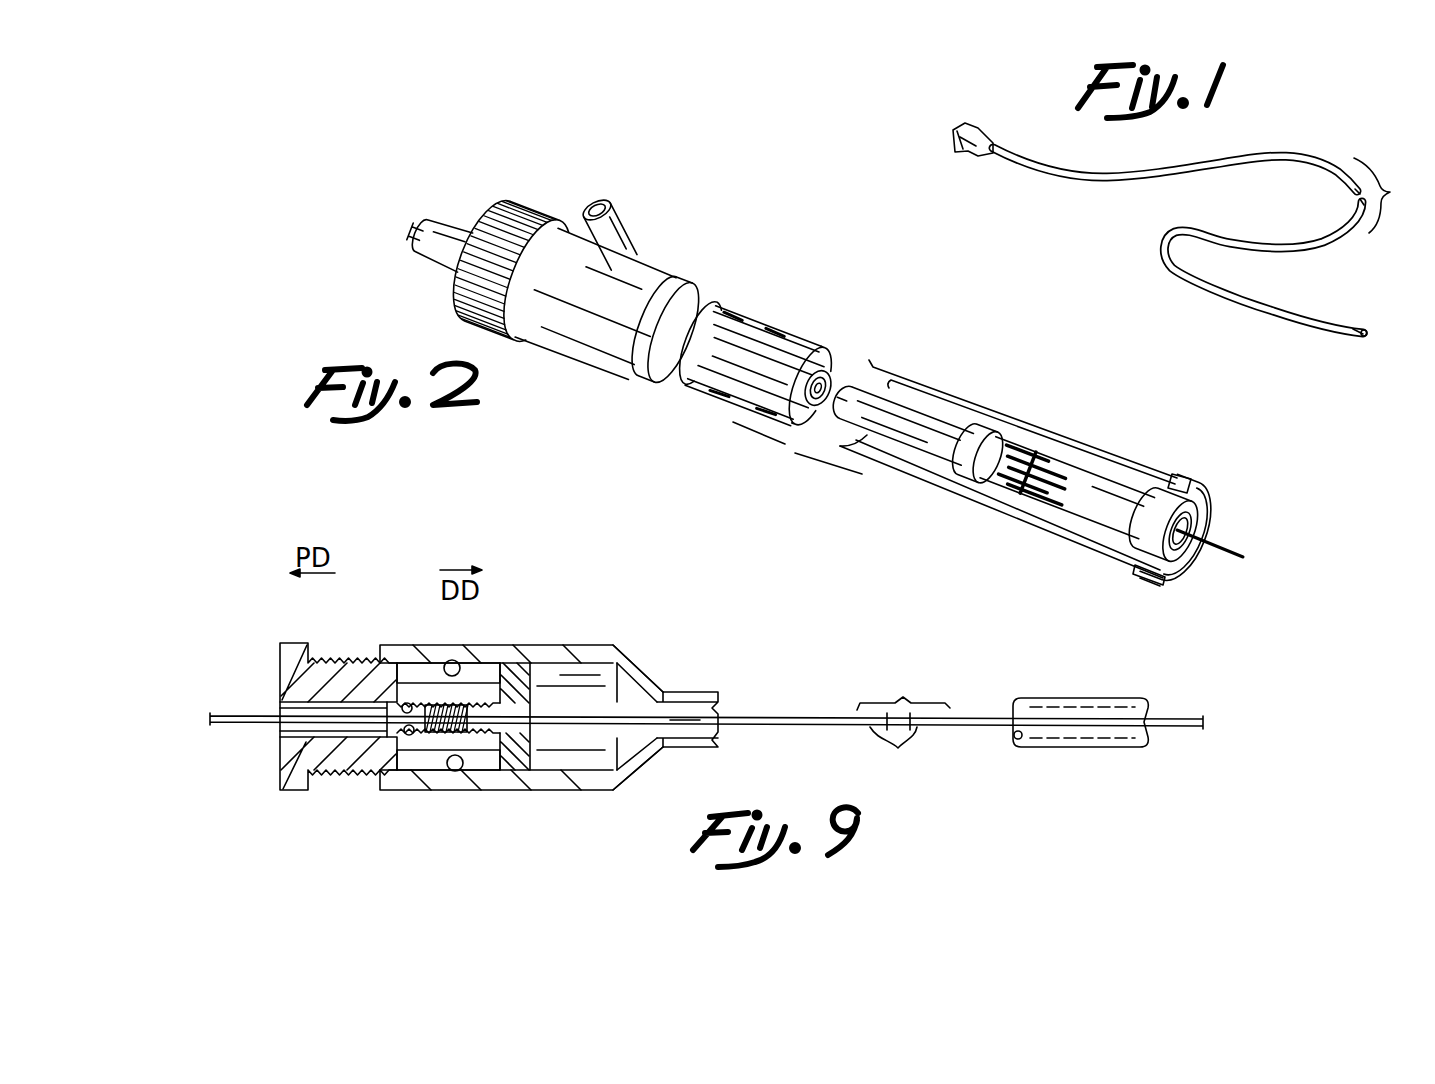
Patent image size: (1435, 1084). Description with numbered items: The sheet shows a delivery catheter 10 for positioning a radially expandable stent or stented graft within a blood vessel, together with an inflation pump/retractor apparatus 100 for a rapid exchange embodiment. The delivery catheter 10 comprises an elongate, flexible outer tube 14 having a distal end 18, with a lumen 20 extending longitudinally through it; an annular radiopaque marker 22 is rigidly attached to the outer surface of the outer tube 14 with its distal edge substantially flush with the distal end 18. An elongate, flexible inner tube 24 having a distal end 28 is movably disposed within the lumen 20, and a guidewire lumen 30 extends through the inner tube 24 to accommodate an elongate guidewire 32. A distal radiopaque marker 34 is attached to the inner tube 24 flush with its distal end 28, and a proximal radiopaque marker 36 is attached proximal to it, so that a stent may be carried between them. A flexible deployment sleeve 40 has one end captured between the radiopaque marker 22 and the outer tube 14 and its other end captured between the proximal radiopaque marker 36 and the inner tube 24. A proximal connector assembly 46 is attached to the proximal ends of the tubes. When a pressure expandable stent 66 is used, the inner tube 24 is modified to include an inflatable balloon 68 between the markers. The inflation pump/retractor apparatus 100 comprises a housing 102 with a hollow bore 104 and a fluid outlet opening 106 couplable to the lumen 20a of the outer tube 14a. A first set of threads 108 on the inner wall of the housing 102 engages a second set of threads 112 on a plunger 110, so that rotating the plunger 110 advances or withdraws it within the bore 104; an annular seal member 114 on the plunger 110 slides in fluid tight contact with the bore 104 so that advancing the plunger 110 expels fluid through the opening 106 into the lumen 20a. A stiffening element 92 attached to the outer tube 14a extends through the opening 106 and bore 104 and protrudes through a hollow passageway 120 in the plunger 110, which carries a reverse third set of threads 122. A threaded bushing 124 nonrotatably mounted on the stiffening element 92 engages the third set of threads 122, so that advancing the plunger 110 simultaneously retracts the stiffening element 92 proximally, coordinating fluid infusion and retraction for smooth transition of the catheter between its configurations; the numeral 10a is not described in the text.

In FIG. 1, the delivery catheter 10 is at (1365, 135).
In FIG. 2, the catheter assembly 10a is at (800, 250).
In FIG. 1, the outer tube 14 is at (1278, 152).
In FIG. 2, the outer tube 14 is at (916, 378).
In FIG. 9, the outer tube 14a is at (1079, 708).
In FIG. 2, the distal end 18 is at (1186, 474).
In FIG. 2, the lumen 20 is at (957, 415).
In FIG. 9, the lumen 20a is at (1013, 731).
In FIG. 1, the radiopaque marker 22 is at (1358, 338).
In FIG. 2, the radiopaque marker 22 is at (1147, 574).
In FIG. 2, the inner tube 24 is at (830, 368).
In FIG. 2, the distal end 28 is at (1212, 512).
In FIG. 2, the guidewire lumen 30 is at (808, 410).
In FIG. 1, the guidewire 32 is at (1367, 331).
In FIG. 2, the guidewire 32 is at (1240, 552).
In FIG. 2, the distal radiopaque marker 34 is at (1157, 547).
In FIG. 2, the proximal radiopaque marker 36 is at (997, 433).
In FIG. 2, the deployment sleeve 40 is at (1063, 527).
In FIG. 1, the proximal connector assembly 46 is at (997, 127).
In FIG. 2, the pressure expandable stent 66 is at (1070, 480).
In FIG. 2, the inflatable balloon 68 is at (1113, 497).
In FIG. 9, the stiffening element 92 is at (217, 723).
In FIG. 9, the inflation pump/retractor apparatus 100 is at (571, 624).
In FIG. 9, the housing 102 is at (590, 778).
In FIG. 9, the hollow bore 104 is at (584, 703).
In FIG. 9, the fluid outlet opening 106 is at (722, 707).
In FIG. 9, the first set of threads 108 is at (456, 664).
In FIG. 9, the plunger 110 is at (280, 663).
In FIG. 9, the second set of threads 112 is at (355, 660).
In FIG. 9, the annular seal member 114 is at (527, 777).
In FIG. 9, the hollow passageway 120 is at (293, 705).
In FIG. 9, the third set of threads 122 is at (408, 706).
In FIG. 9, the threaded bushing 124 is at (558, 647).